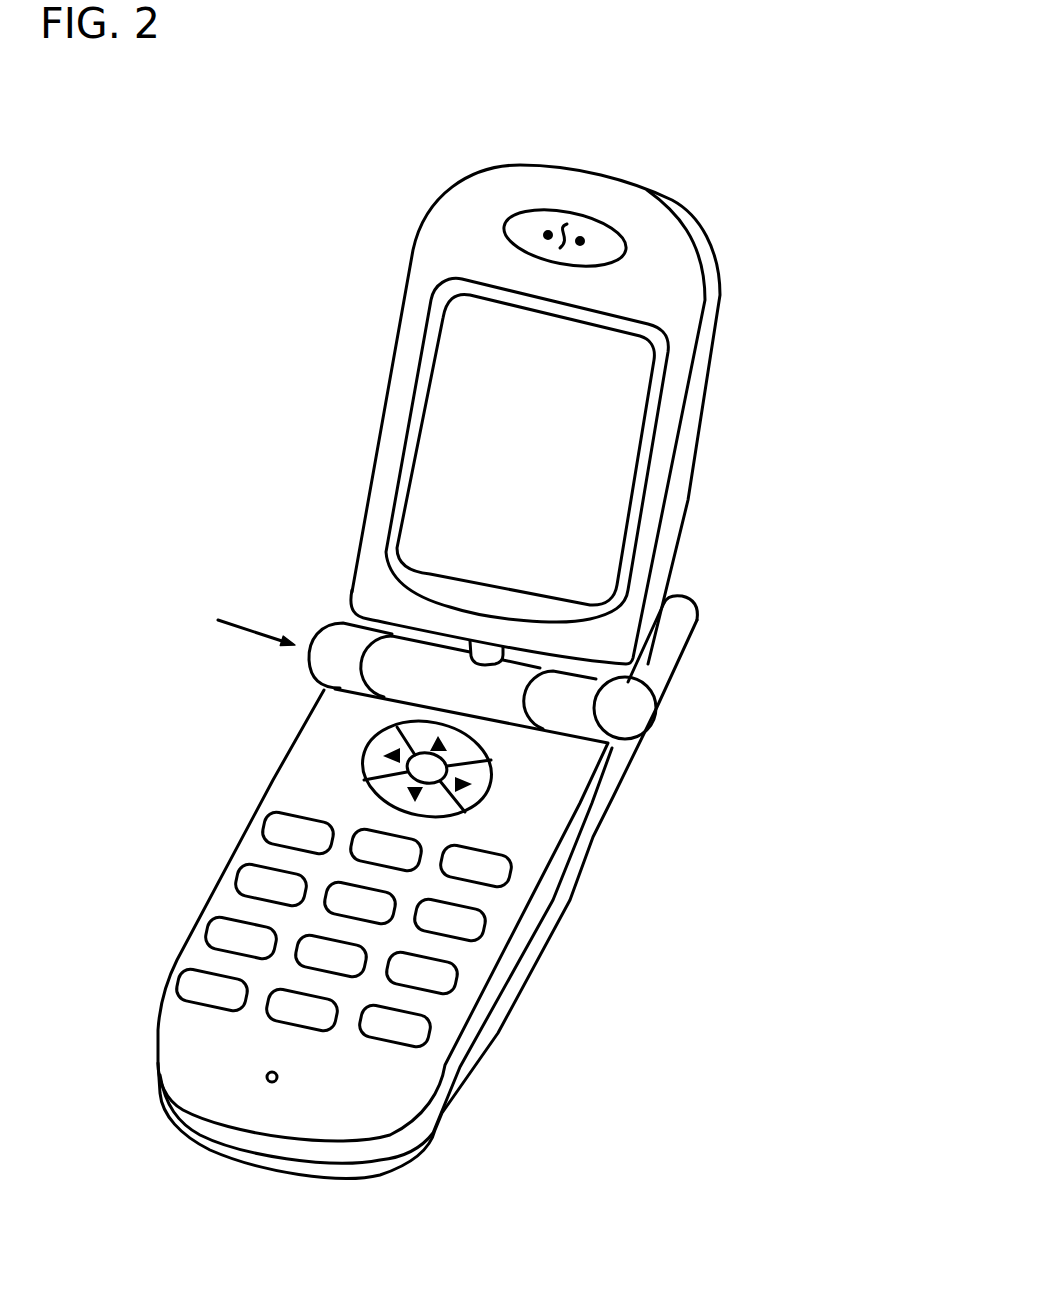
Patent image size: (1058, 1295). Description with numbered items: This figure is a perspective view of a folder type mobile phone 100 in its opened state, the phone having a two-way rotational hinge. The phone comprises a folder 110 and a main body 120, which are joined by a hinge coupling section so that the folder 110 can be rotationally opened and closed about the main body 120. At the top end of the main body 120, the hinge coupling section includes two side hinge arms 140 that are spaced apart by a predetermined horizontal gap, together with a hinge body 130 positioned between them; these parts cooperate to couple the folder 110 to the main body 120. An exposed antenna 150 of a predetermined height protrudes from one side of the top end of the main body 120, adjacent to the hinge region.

The portable folder-type terminal 100 is at (835, 206).
The folder 110 is at (708, 376).
The main body 120 is at (183, 1038).
The hinge body 130 is at (430, 654).
The side hinge arms 140 is at (357, 678).
The exposed antenna 150 is at (673, 633).